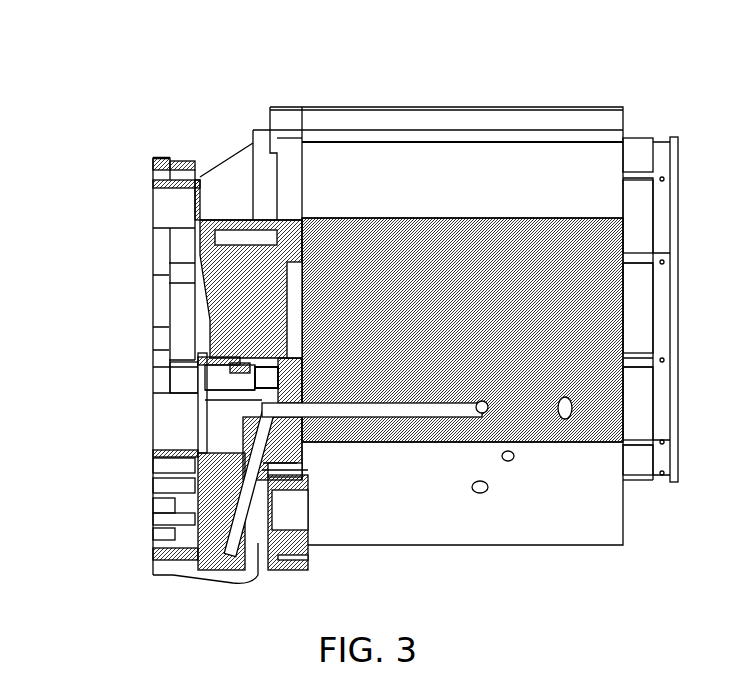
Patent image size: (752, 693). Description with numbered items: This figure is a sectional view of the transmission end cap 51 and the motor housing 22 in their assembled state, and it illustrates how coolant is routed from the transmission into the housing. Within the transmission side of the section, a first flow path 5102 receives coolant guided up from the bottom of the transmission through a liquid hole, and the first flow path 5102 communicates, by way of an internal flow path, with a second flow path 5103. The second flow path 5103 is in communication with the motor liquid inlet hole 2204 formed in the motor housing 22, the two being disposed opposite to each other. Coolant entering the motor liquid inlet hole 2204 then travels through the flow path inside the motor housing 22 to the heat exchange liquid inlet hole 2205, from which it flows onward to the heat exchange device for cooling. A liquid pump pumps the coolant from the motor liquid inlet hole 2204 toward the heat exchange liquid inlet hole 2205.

The motor housing 22 is at (512, 175).
The transmission end cap 51 is at (237, 193).
The second flow path 5103 is at (295, 412).
The first flow path 5102 is at (232, 533).
The motor liquid inlet hole 2204 is at (312, 408).
The heat exchange liquid inlet hole 2205 is at (485, 412).